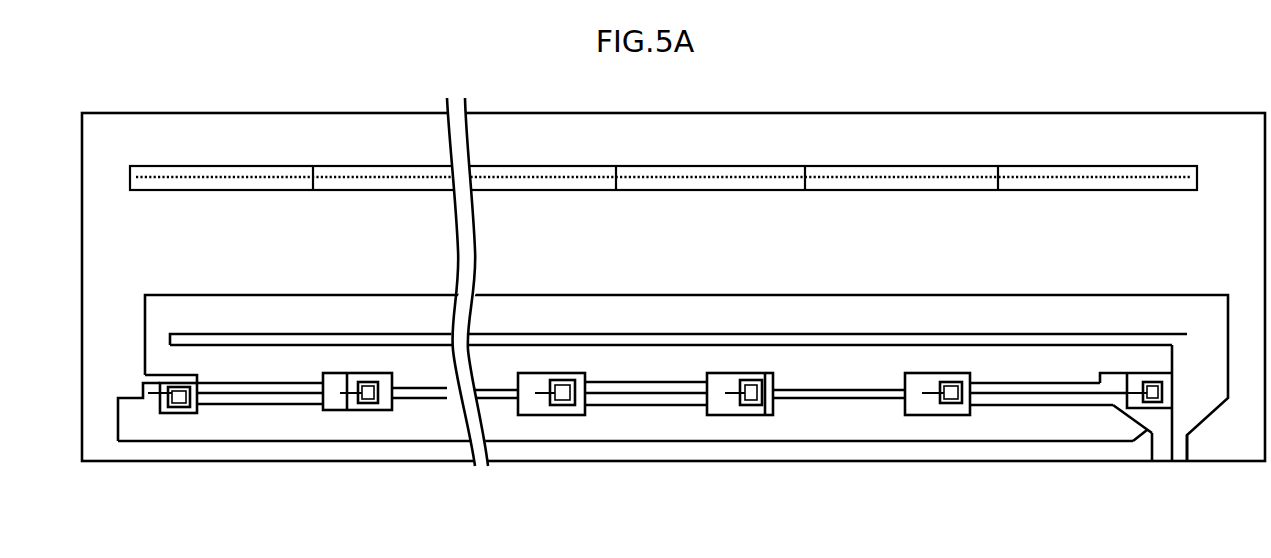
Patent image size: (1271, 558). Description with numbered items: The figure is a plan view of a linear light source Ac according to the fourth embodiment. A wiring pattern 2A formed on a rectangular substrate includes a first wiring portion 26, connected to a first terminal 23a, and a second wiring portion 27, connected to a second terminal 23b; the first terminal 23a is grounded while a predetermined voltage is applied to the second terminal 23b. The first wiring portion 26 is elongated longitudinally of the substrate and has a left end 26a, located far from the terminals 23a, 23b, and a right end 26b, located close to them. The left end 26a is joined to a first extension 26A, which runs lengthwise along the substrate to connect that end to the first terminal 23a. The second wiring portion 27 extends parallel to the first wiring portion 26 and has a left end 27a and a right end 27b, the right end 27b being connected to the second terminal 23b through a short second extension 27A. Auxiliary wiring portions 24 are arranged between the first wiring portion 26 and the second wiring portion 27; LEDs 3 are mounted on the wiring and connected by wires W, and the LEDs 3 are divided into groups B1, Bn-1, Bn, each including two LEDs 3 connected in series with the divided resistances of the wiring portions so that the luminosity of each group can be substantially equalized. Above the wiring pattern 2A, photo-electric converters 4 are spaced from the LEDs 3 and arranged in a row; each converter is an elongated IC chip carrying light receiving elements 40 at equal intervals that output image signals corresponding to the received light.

The linear light source Ac is at (1166, 105).
The photo-electric converter 4 is at (270, 176).
The light receiving element 40 is at (697, 176).
The wiring pattern 2A is at (1011, 283).
The first wiring portion 26 is at (648, 357).
The first extension 26A is at (708, 333).
The left end of first wiring portion 26a is at (153, 363).
The right end of first wiring portion 26b is at (1152, 380).
The second wiring portion 27 is at (662, 428).
The left end of second wiring portion 27a is at (128, 420).
The right end of second wiring portion 27b is at (1088, 432).
The second extension 27A is at (1133, 441).
The first terminal 23a is at (1182, 461).
The second terminal 23b is at (1158, 461).
The auxiliary wiring portion 24 is at (257, 383).
The LED 3 is at (178, 407).
The wire W is at (163, 412).
The first LED group B1 is at (186, 425).
The (n-1)th LED group Bn-1 is at (550, 427).
The nth LED group Bn is at (944, 427).